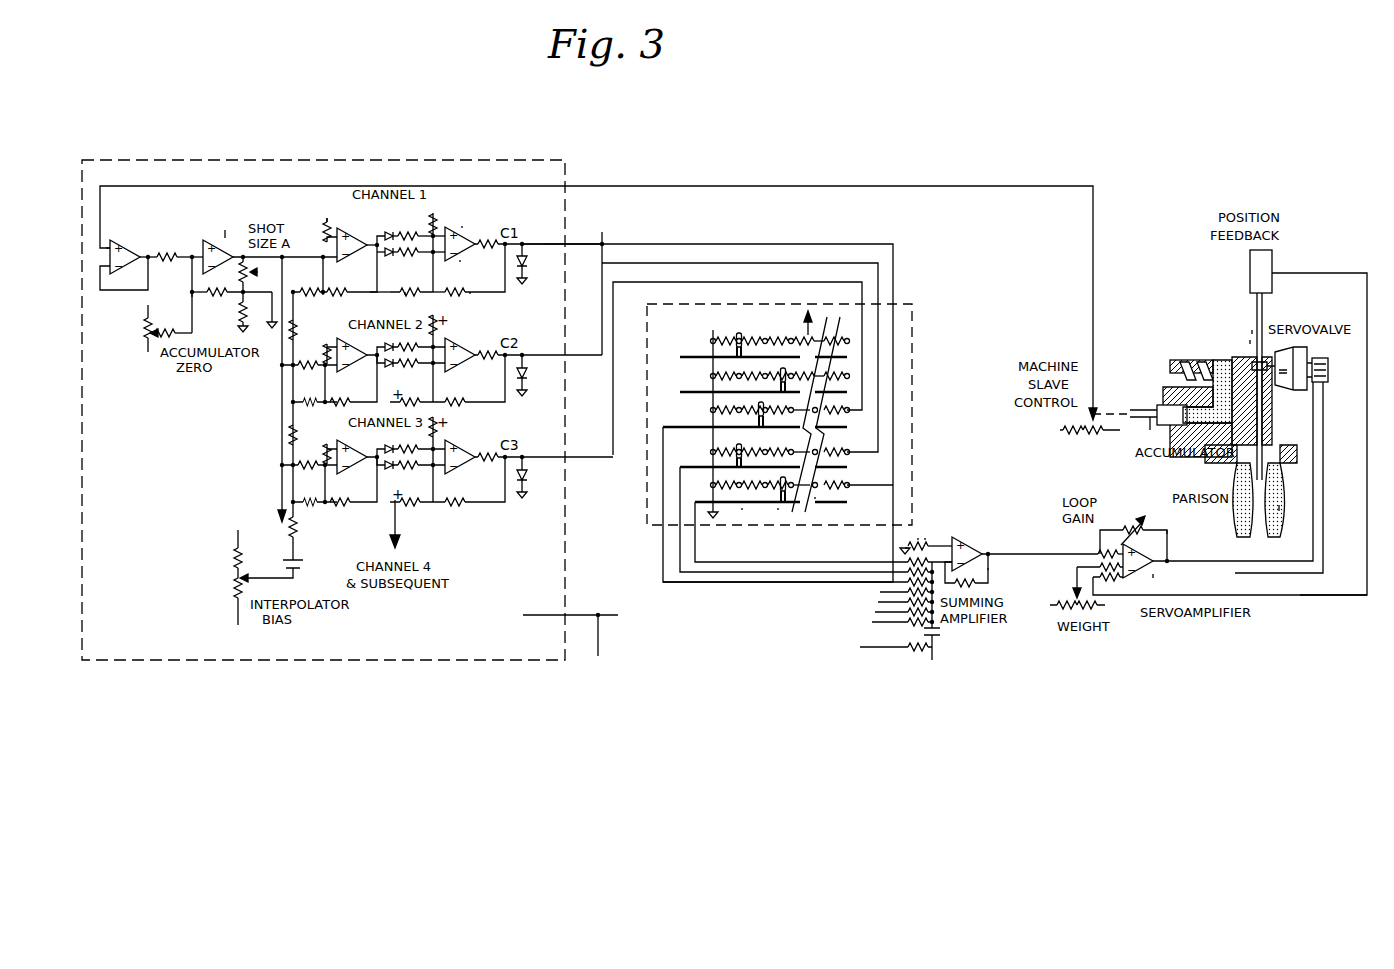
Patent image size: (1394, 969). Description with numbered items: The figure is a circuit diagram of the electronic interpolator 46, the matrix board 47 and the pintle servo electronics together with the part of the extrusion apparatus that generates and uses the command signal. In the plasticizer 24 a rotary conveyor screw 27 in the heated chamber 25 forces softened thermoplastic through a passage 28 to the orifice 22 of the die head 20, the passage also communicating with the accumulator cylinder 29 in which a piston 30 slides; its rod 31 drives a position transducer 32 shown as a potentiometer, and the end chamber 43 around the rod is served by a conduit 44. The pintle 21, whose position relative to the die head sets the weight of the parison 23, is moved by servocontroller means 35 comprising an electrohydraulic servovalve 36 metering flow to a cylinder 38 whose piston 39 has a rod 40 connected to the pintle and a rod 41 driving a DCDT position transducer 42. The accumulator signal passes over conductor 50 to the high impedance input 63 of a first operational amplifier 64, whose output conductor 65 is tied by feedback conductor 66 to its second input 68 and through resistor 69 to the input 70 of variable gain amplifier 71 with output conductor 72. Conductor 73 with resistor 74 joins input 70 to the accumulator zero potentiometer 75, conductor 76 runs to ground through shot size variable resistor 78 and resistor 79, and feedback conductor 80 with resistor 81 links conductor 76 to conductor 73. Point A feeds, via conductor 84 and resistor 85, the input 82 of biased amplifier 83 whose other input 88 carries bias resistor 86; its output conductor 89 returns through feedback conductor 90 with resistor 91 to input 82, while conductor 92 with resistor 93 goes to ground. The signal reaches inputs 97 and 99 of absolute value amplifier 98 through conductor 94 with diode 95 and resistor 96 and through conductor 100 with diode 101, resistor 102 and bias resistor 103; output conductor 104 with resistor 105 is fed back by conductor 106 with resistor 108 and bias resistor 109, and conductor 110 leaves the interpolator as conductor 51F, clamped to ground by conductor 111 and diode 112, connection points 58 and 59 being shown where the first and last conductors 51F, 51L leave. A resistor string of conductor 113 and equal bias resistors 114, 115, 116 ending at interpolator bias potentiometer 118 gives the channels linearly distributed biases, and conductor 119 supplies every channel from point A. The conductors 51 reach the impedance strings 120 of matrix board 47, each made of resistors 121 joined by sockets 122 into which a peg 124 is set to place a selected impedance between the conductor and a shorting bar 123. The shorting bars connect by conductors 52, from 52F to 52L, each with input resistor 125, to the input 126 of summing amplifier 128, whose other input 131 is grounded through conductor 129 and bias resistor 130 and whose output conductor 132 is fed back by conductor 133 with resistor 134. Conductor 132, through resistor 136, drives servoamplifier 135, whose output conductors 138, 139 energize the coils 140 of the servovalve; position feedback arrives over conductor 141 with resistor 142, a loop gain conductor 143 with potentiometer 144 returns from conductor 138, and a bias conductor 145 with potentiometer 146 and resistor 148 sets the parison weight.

The die head 20 is at (1284, 464).
The pintle 21 is at (1257, 483).
The orifice 22 is at (1278, 446).
The parison 23 is at (1278, 513).
The plasticizer 24 is at (1167, 356).
The heated chamber 25 is at (1166, 382).
The rotary conveyor screw 27 is at (1187, 358).
The passage 28 is at (1170, 413).
The accumulator cylinder 29 is at (1158, 412).
The accumulator piston 30 is at (1186, 434).
The piston rod 31 is at (1122, 414).
The position transducer 32 is at (1084, 436).
The servocontroller means 35 is at (1250, 330).
The electrohydraulic servovalve 36 is at (1314, 358).
The cylinder 38 is at (1248, 340).
The piston 39 is at (1252, 362).
The rod 40 is at (1267, 394).
The rod 41 is at (1266, 306).
The position transducer 42 is at (1236, 259).
The end chamber 43 is at (1151, 427).
The conduit 44 is at (1152, 440).
The electronic interpolator 46 is at (568, 159).
The matrix board 47 is at (918, 302).
The conductor 50 is at (846, 187).
The conductors 51 is at (733, 258).
The conductor for first channel 51F is at (579, 242).
The conductor for last channel 51L is at (583, 614).
The conductors 52 is at (748, 574).
The conductor for first string 52F is at (838, 560).
The last conductor 52L is at (886, 650).
The junction 58 is at (604, 232).
The junction 59 is at (604, 643).
The high impedance input 63 is at (110, 240).
The first operational amplifier 64 is at (136, 249).
The output conductor 65 is at (154, 256).
The feedback conductor 66 is at (104, 292).
The second input 68 is at (111, 258).
The resistor 69 is at (170, 270).
The input 70 is at (202, 255).
The operational amplifier 71 is at (232, 233).
The output conductor 72 is at (240, 255).
The conductor 73 is at (190, 293).
The resistor 74 is at (172, 333).
The potentiometer 75 is at (144, 334).
The conductor 76 is at (241, 278).
The variable resistor 78 is at (258, 273).
The resistor 79 is at (244, 314).
The feedback conductor 80 is at (202, 299).
The resistor 81 is at (212, 292).
The input 82 is at (333, 276).
The biased operational amplifier 83 is at (334, 226).
The conductor 84 is at (286, 249).
The resistor 85 is at (308, 257).
The bias resistor 86 is at (326, 221).
The input 88 is at (334, 213).
The output conductor 89 is at (362, 262).
The feedback conductor 90 is at (370, 288).
The resistor 91 is at (339, 294).
The conductor 92 is at (270, 308).
The resistor 93 is at (298, 292).
The conductor 94 is at (376, 269).
The diode 95 is at (386, 256).
The resistor 96 is at (412, 268).
The input 97 is at (438, 292).
The absolute value operational amplifier 98 is at (470, 225).
The input 99 is at (462, 226).
The conductor 100 is at (380, 232).
The diode 101 is at (394, 230).
The resistor 102 is at (434, 218).
The bias resistor 103 is at (436, 217).
The output conductor 104 is at (486, 236).
The resistor 105 is at (463, 268).
The feedback conductor 106 is at (470, 294).
The resistor 108 is at (461, 290).
The bias resistor 109 is at (406, 297).
The conductor 110 is at (530, 235).
The conductor 111 is at (529, 256).
The diode 112 is at (529, 272).
The conductor 113 is at (294, 306).
The bias resistor 114 is at (302, 365).
The bias resistor 115 is at (302, 468).
The bias resistor 116 is at (302, 531).
The interpolator bias potentiometer 118 is at (226, 589).
The conductor 119 is at (280, 419).
The impedance string 120 is at (850, 500).
The resistors 121 is at (760, 508).
The conductive socket 122 is at (814, 500).
The conductive shorting bar 123 is at (717, 512).
The conductive peg 124 is at (778, 510).
The input resistor 125 is at (909, 554).
The input 126 is at (936, 626).
The summing amplifier 128 is at (978, 550).
The conductor 129 is at (918, 532).
The bias resistor 130 is at (922, 538).
The input 131 is at (928, 546).
The output conductor 132 is at (996, 552).
The feedback conductor 133 is at (990, 571).
The feedback resistor 134 is at (980, 584).
The servoamplifier 135 is at (1164, 578).
The resistor 136 is at (1096, 555).
The output conductor 138 is at (1246, 556).
The output conductor 139 is at (1242, 573).
The coils 140 is at (1330, 370).
The feedback conductor 141 is at (1305, 596).
The resistor 142 is at (1140, 561).
The conductor 143 is at (1168, 535).
The potentiometer 144 is at (1128, 528).
The conductor 145 is at (1086, 578).
The potentiometer 146 is at (1066, 603).
The resistor 148 is at (1082, 567).